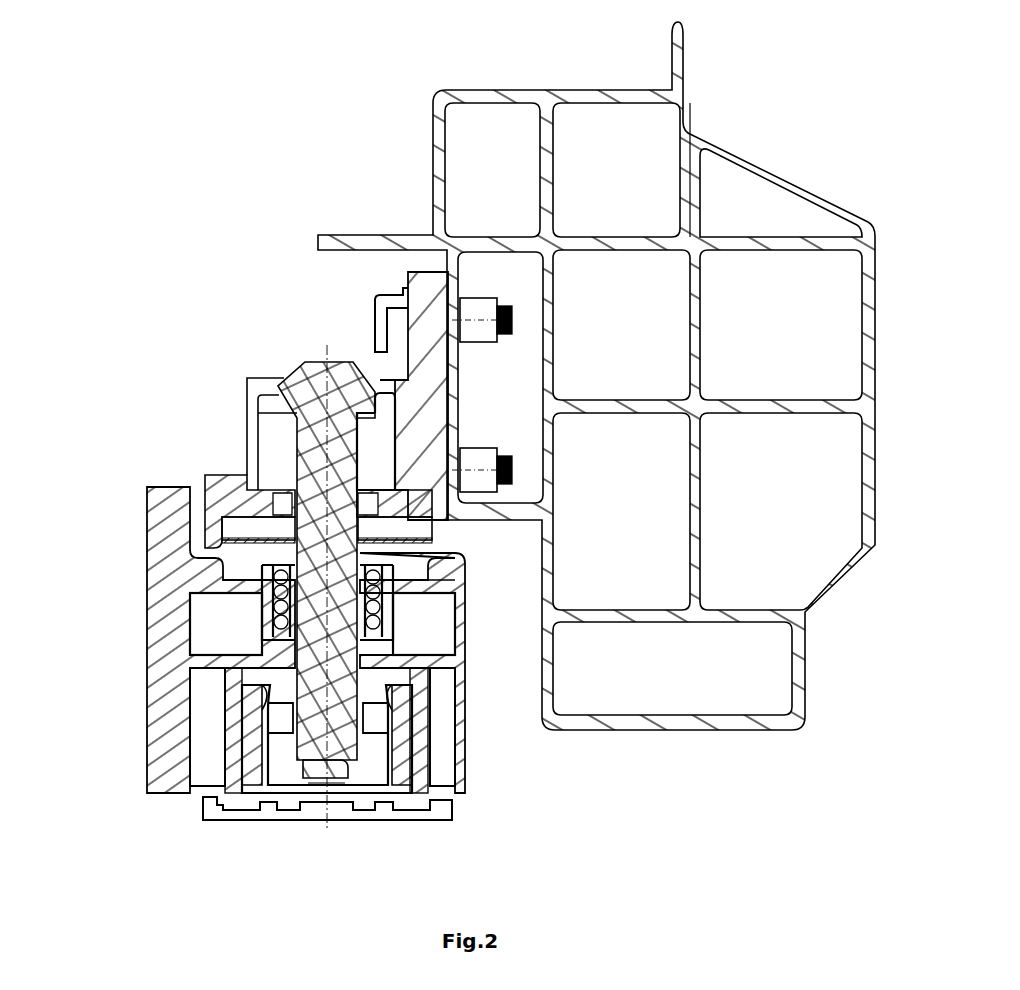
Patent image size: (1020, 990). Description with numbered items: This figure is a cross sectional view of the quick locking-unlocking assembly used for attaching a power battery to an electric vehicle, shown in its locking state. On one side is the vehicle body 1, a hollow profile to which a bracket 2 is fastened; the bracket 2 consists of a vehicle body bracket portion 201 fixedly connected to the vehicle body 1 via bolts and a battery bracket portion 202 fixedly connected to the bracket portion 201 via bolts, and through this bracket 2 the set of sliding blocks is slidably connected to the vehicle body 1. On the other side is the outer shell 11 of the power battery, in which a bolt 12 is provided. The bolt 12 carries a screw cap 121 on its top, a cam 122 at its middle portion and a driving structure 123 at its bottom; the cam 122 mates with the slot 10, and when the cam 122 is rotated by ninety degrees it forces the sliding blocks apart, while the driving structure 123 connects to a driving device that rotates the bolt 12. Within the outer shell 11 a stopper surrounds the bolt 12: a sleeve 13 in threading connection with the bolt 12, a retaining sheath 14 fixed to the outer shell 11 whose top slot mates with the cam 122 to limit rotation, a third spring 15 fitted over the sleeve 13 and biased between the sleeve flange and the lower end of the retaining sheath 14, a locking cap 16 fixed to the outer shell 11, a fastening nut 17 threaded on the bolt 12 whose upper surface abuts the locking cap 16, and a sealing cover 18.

The vehicle body 1 is at (795, 240).
The bracket 2 is at (302, 306).
The vehicle body bracket portion 201 is at (418, 294).
The battery bracket portion 202 is at (387, 378).
The slot 10 is at (266, 520).
The outer shell 11 is at (168, 577).
The bolt 12 is at (212, 510).
The screw cap 121 is at (320, 380).
The cam 122 is at (268, 546).
The driving structure 123 is at (311, 770).
The sleeve 13 is at (370, 652).
The retaining sheath 14 is at (411, 574).
The third spring 15 is at (388, 630).
The locking cap 16 is at (416, 780).
The fastening nut 17 is at (370, 730).
The sealing cover 18 is at (243, 809).